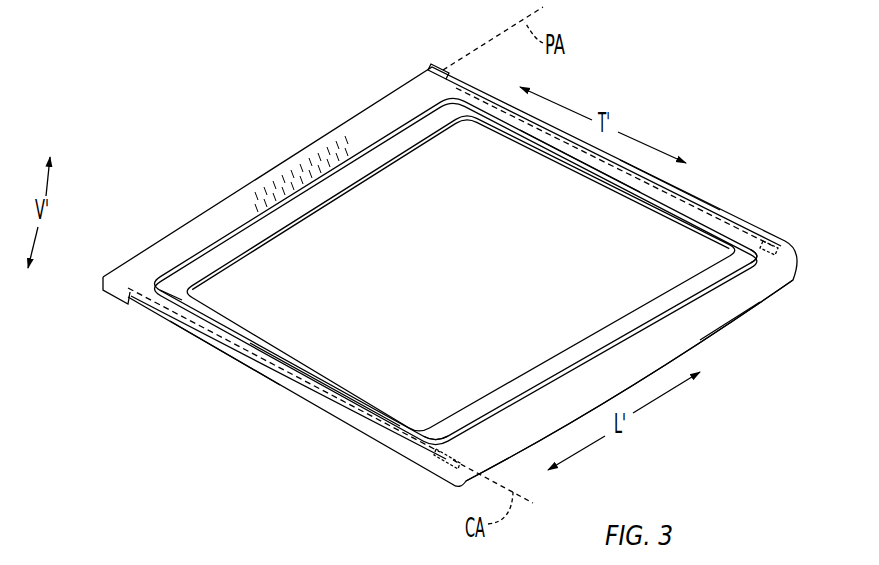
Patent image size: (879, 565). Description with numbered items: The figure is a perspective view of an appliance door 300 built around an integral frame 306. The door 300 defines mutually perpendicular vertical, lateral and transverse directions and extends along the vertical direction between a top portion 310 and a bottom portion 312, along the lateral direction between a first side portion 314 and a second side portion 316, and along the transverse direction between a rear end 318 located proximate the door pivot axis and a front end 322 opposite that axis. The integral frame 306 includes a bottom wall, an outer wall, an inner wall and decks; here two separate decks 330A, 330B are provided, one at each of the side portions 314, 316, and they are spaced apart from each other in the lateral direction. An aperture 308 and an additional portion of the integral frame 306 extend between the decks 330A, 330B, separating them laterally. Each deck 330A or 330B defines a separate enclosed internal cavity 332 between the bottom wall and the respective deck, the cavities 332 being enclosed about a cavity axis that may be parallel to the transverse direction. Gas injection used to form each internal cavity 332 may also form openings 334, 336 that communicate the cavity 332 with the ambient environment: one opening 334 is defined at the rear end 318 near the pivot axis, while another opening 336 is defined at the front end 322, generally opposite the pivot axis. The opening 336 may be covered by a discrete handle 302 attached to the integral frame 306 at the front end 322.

The door 300 is at (190, 104).
The handle 302 is at (736, 302).
The integral frame 306 is at (343, 125).
The aperture 308 is at (338, 247).
The top portion 310 is at (206, 226).
The bottom portion 312 is at (184, 244).
The first side portion 314 is at (204, 350).
The second side portion 316 is at (693, 189).
The rear end 318 is at (296, 140).
The front end 322 is at (708, 353).
The first deck 330A is at (326, 382).
The second deck 330B is at (560, 152).
The internal cavity 332 is at (704, 211).
The opening 334 is at (430, 68).
The opening 336 is at (788, 237).